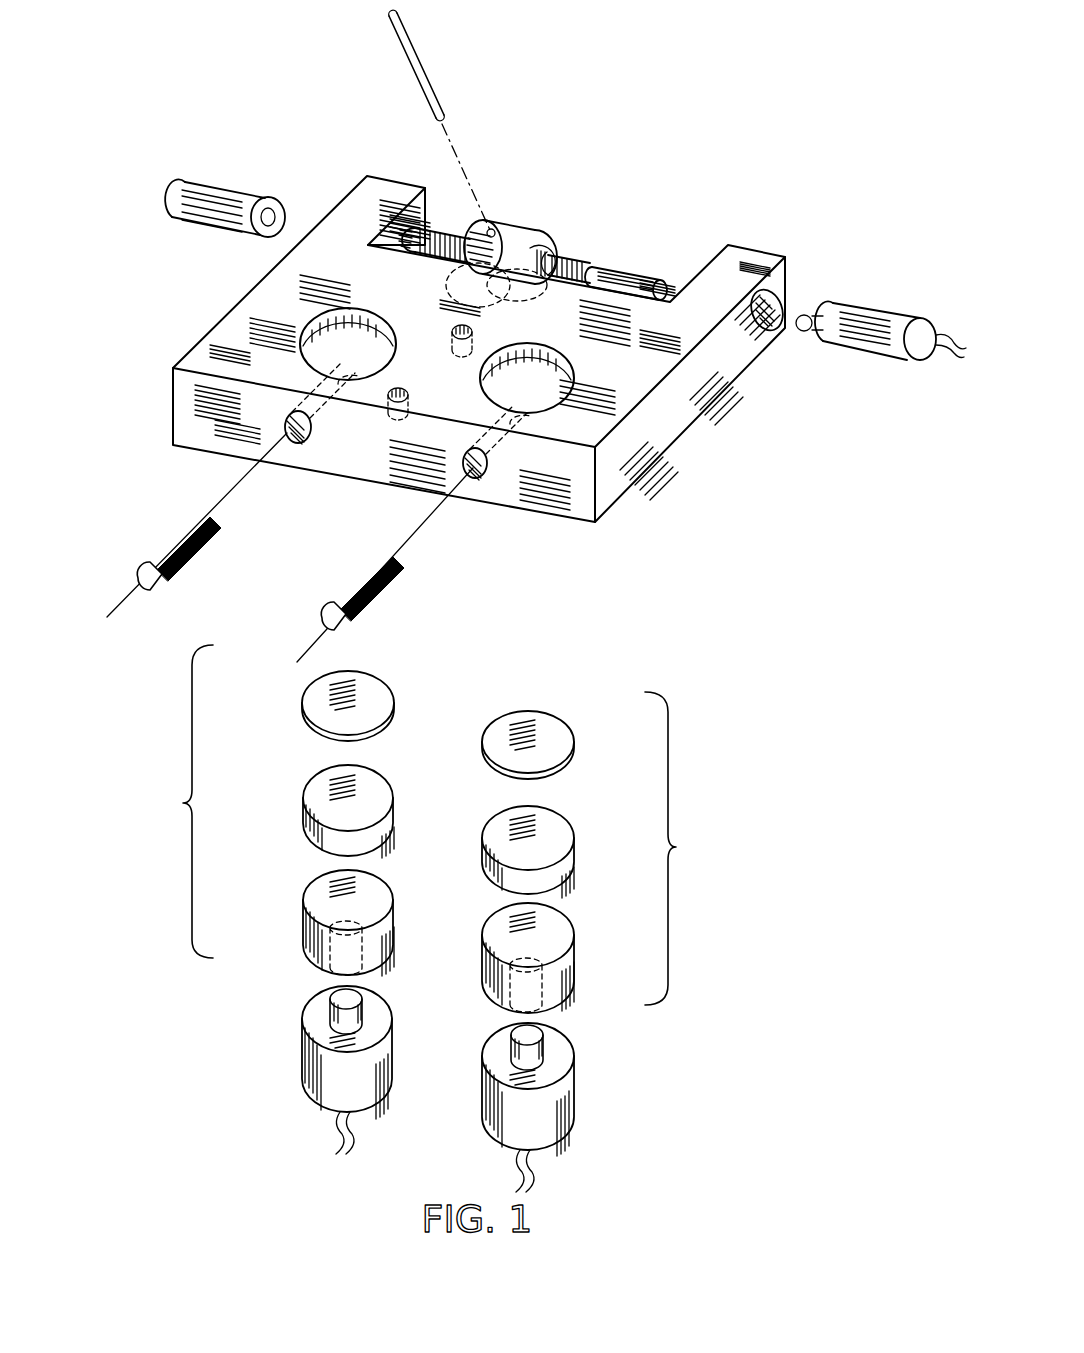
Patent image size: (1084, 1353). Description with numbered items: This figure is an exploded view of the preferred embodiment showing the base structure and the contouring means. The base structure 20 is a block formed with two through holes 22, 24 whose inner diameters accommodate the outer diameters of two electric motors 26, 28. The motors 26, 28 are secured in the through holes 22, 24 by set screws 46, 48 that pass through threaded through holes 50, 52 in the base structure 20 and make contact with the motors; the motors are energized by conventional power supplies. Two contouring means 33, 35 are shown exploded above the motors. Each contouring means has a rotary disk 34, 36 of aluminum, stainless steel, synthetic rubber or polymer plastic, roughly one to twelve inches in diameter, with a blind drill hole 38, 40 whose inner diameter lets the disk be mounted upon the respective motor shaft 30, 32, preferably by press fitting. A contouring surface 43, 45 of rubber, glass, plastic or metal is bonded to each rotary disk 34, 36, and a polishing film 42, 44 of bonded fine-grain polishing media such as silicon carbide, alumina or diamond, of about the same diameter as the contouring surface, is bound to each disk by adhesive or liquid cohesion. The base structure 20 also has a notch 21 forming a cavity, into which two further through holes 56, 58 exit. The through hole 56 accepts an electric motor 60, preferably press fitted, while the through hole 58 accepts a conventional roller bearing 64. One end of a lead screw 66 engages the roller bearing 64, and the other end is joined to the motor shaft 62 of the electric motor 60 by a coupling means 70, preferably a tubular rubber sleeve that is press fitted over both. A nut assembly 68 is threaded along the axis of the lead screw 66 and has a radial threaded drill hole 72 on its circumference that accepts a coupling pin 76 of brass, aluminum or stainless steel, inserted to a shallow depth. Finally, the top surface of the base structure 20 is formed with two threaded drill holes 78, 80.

The base structure 20 is at (655, 462).
The notch 21 is at (690, 270).
The through hole 22 is at (328, 368).
The through hole 24 is at (555, 385).
The electric motor 26 is at (312, 1072).
The electric motor 28 is at (572, 1072).
The motor shaft 30 is at (340, 1010).
The motor shaft 32 is at (545, 1040).
The contouring means 33 is at (179, 801).
The rotary disk 34 is at (322, 903).
The contouring means 35 is at (681, 848).
The rotary disk 36 is at (540, 937).
The blind drill hole 38 is at (334, 948).
The blind drill hole 40 is at (535, 986).
The polishing film 42 is at (322, 705).
The contouring surface 43 is at (322, 800).
The polishing film 44 is at (540, 742).
The contouring surface 45 is at (540, 838).
The set screw 46 is at (166, 545).
The set screw 48 is at (380, 588).
The threaded through hole 50 is at (286, 432).
The threaded through hole 52 is at (485, 475).
The through hole 56 is at (784, 292).
The through hole 58 is at (432, 237).
The electric motor 60 is at (863, 305).
The motor shaft 62 is at (805, 331).
The roller bearing 64 is at (205, 182).
The lead screw 66 is at (458, 243).
The nut assembly 68 is at (543, 240).
The coupling means 70 is at (632, 272).
The radial threaded drill hole 72 is at (494, 230).
The coupling pin 76 is at (418, 58).
The threaded drill hole 78 is at (474, 345).
The threaded drill hole 80 is at (398, 388).